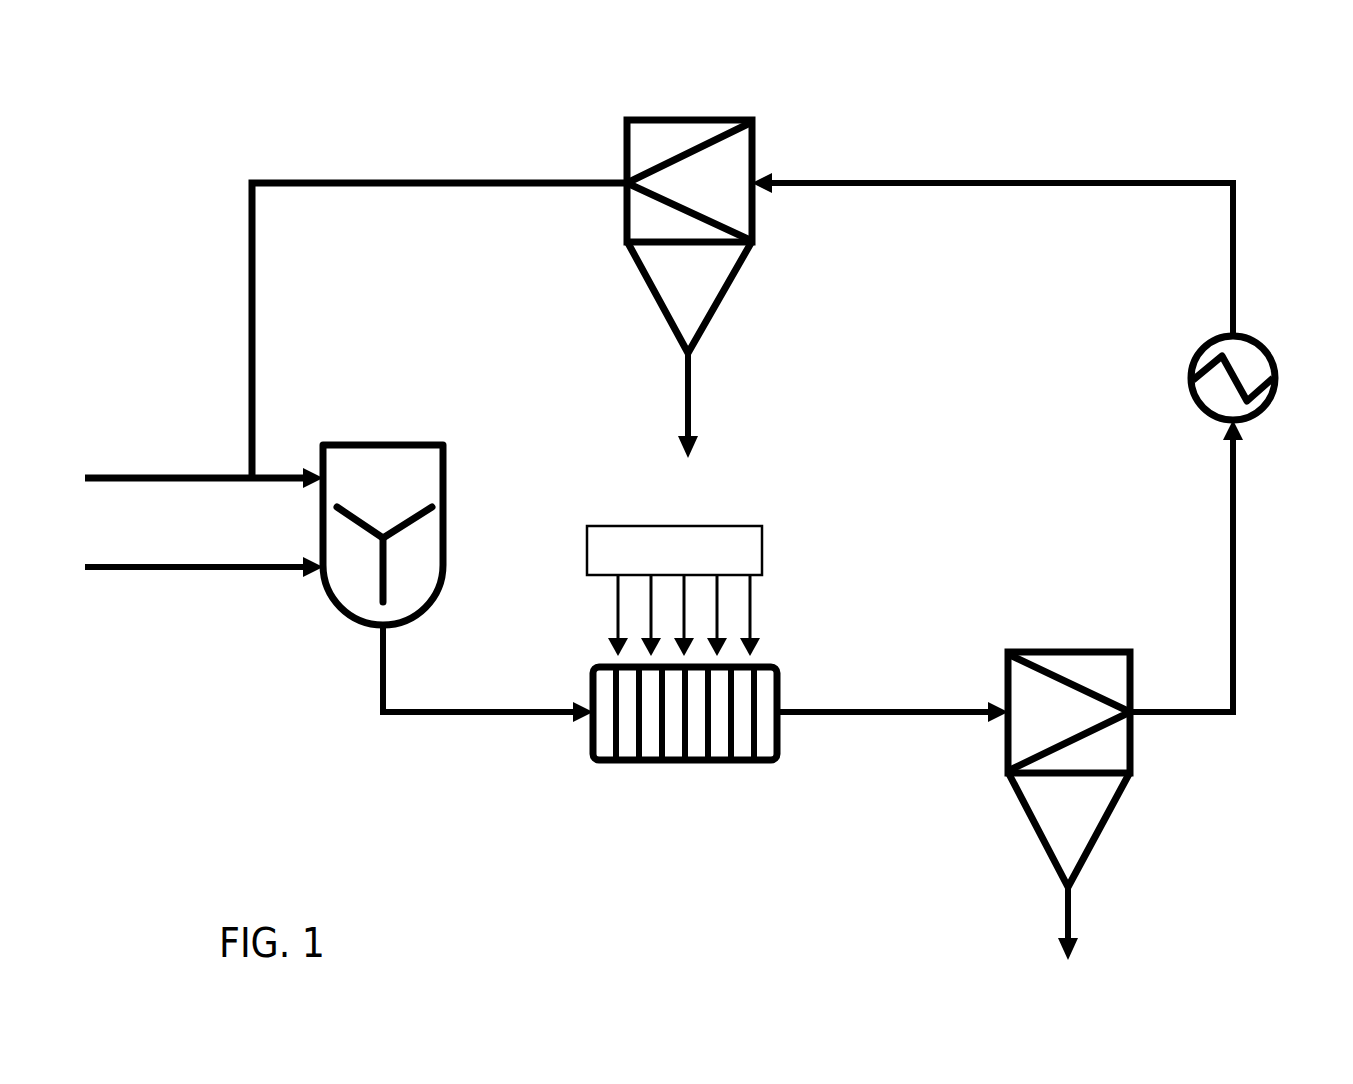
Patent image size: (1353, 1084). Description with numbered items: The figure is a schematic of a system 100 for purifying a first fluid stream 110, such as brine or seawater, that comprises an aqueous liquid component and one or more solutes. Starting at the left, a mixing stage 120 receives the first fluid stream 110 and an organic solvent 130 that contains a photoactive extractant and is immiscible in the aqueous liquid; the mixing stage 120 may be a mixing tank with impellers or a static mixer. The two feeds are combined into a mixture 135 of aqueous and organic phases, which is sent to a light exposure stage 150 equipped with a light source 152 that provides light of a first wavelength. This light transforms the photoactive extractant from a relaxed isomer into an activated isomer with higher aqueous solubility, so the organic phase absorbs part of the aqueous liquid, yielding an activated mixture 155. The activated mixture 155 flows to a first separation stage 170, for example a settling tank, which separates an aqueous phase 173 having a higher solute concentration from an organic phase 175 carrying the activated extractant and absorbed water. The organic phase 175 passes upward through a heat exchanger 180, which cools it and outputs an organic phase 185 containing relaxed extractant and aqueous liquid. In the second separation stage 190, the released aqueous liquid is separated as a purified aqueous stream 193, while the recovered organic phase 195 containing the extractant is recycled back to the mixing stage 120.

The system 100 is at (1192, 98).
The first fluid stream 110 is at (157, 586).
The mixing stage 120 is at (417, 427).
The organic solvent 130 is at (184, 462).
The mixture 135 is at (448, 728).
The light exposure stage 150 is at (708, 782).
The light source 152 is at (651, 566).
The activated mixture 155 is at (885, 725).
The first separation stage 170 is at (1064, 625).
The aqueous phase 173 is at (1052, 927).
The organic phase 175 is at (1256, 670).
The heat exchanger 180 is at (1178, 383).
The organic phase 185 is at (997, 200).
The second separation stage 190 is at (678, 105).
The purified aqueous stream 193 is at (670, 403).
The recovered organic phase 195 is at (411, 163).